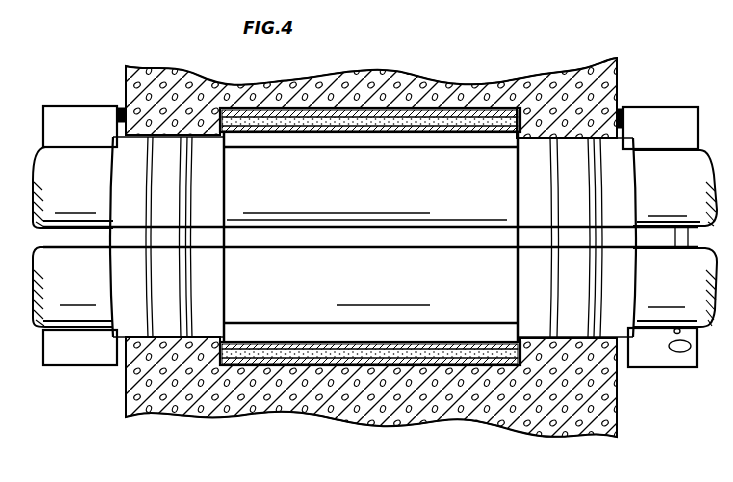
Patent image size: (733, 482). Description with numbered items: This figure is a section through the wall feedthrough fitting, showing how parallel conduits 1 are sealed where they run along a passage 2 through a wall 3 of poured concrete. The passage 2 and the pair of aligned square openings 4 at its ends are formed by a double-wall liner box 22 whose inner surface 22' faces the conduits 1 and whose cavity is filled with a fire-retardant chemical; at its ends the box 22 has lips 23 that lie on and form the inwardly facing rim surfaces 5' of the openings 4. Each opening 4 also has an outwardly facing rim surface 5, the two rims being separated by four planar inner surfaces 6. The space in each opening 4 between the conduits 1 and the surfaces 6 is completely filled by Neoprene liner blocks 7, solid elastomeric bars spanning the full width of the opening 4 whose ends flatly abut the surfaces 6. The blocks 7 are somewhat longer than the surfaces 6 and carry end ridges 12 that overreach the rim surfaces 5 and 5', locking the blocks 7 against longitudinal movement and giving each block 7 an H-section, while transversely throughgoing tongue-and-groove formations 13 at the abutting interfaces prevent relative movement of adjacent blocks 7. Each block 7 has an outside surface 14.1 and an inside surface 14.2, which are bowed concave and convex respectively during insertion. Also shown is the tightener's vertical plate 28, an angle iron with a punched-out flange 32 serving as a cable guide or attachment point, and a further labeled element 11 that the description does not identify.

The conduit 1 is at (386, 210).
The passage 2 is at (418, 148).
The wall 3 is at (538, 92).
The opening 4 is at (133, 102).
The outwardly facing rim surface 5 is at (370, 114).
The inwardly facing rim surface 5' is at (372, 158).
The planar inner surface 6 is at (172, 140).
The liner block 7 is at (134, 249).
The sealing joint 11 is at (545, 128).
The end ridge 12 is at (118, 342).
The tongue-and-groove formation 13 is at (560, 206).
The outside surface 14.1 is at (106, 184).
The inside surface 14.2 is at (514, 186).
The liner box 22 is at (391, 240).
The inner surface 22' is at (370, 236).
The lip 23 is at (226, 328).
The vertical plate 28 is at (621, 116).
The flange 32 is at (60, 372).